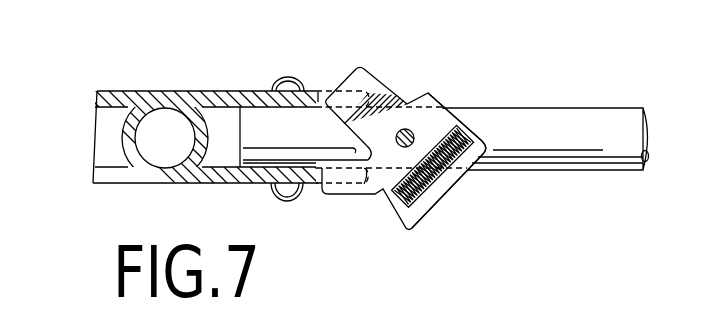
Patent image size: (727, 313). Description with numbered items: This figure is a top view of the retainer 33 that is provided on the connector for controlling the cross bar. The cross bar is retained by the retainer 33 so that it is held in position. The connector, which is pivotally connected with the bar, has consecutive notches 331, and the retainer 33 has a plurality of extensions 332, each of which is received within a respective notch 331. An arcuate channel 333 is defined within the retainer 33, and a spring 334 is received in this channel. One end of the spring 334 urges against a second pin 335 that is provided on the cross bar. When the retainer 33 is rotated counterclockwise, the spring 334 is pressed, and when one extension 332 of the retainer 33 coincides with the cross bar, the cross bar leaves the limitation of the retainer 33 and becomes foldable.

The retainer 33 is at (436, 126).
The notches 331 is at (319, 94).
The extensions 332 is at (365, 62).
The arcuate channel 333 is at (422, 226).
The spring 334 is at (430, 175).
The second pin 335 is at (418, 168).